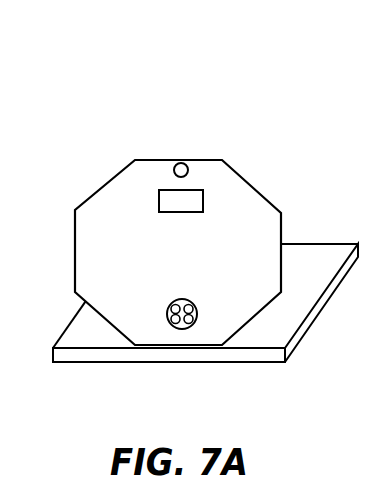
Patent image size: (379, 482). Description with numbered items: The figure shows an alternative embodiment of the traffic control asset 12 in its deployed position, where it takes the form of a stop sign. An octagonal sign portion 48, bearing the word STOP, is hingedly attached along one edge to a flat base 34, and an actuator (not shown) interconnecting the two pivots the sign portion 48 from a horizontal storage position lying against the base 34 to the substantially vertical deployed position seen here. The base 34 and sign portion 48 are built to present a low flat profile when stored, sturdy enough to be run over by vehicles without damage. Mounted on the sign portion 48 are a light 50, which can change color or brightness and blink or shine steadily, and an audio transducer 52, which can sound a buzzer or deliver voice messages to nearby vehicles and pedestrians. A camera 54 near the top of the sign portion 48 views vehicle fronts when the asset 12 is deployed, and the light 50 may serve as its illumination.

The traffic control asset 12 is at (105, 111).
The base 34 is at (300, 257).
The sign portion 48 is at (232, 197).
The light 50 is at (163, 190).
The audio transducer 52 is at (182, 330).
The camera 54 is at (188, 167).